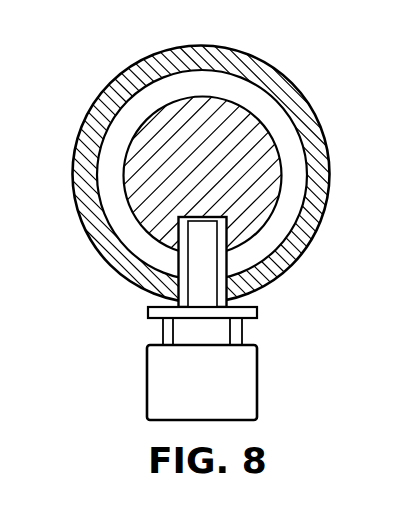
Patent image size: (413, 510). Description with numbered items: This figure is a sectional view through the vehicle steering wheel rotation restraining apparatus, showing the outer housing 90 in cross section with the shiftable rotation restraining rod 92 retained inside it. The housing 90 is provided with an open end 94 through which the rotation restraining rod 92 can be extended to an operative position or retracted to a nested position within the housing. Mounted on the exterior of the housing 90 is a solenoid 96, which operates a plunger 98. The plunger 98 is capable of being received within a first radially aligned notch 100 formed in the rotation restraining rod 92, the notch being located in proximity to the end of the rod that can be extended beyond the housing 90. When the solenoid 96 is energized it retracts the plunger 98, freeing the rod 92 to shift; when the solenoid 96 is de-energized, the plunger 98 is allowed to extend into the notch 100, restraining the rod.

The outer housing 90 is at (310, 100).
The rotation restraining rod 92 is at (236, 99).
The open end 94 is at (122, 133).
The solenoid 96 is at (258, 391).
The plunger 98 is at (222, 267).
The first radially aligned notch 100 is at (183, 216).